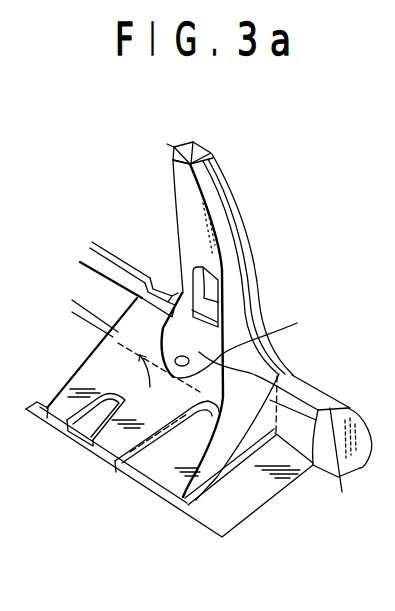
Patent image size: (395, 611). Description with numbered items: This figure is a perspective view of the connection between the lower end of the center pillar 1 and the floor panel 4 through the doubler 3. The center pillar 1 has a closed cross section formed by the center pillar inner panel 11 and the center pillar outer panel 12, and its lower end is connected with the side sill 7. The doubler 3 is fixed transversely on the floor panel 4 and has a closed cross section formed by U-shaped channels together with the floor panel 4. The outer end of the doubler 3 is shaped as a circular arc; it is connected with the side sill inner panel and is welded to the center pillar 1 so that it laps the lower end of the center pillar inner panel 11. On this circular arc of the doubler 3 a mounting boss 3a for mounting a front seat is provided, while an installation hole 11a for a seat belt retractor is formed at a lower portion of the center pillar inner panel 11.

The center pillar 1 is at (230, 299).
The center pillar outer panel 12 is at (213, 157).
The center pillar inner panel 11 is at (192, 201).
The installation hole 11a is at (218, 288).
The doubler 3 is at (112, 378).
The mounting boss 3a is at (297, 323).
The side sill 7 is at (350, 409).
The floor panel 4 is at (255, 491).